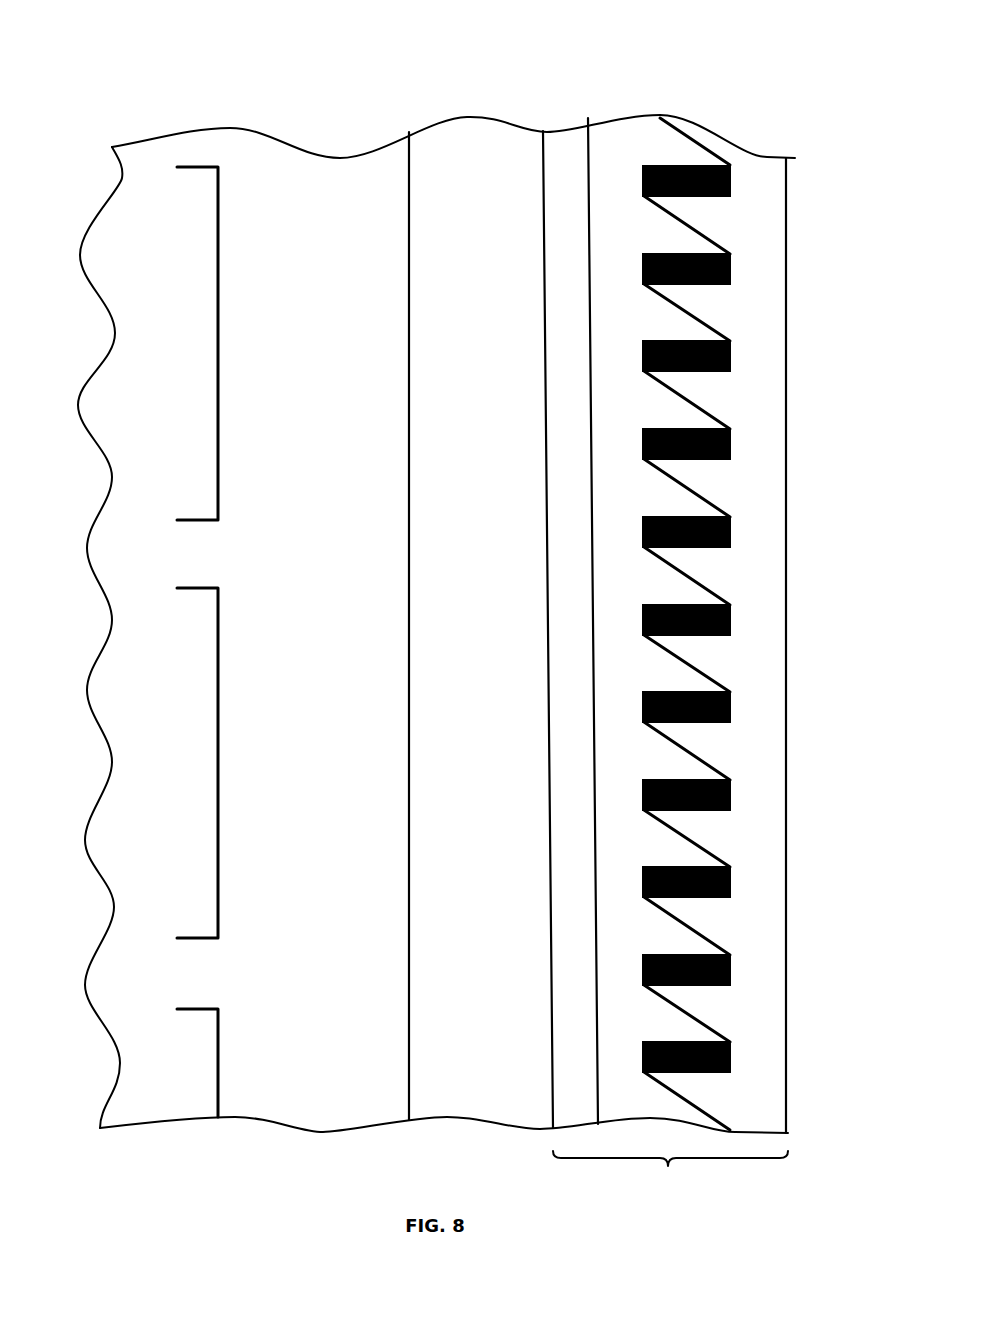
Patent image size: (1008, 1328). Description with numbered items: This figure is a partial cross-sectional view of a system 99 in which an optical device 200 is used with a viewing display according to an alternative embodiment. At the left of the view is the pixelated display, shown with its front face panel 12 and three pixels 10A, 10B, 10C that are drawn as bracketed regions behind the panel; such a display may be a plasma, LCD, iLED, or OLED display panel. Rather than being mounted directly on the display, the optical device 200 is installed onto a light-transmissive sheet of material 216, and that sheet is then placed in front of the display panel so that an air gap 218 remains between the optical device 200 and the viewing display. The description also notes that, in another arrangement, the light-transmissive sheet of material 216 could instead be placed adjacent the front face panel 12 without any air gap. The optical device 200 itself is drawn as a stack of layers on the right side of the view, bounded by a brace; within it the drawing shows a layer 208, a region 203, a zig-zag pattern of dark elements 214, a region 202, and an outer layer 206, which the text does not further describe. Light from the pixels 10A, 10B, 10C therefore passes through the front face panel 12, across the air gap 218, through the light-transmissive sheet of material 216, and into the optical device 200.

The system 99 is at (365, 118).
The front face panel 12 is at (255, 187).
The pixel 10A is at (182, 348).
The pixel 10B is at (182, 880).
The pixel 10C is at (185, 1061).
The air gap 218 is at (455, 160).
The light-transmissive sheet of material 216 is at (567, 158).
The conductive elements 214 is at (673, 165).
The gap 203 is at (632, 411).
The winding region 202 is at (753, 363).
The layer 208 is at (597, 1005).
The outer layer 206 is at (790, 968).
The optical device 200 is at (670, 1179).